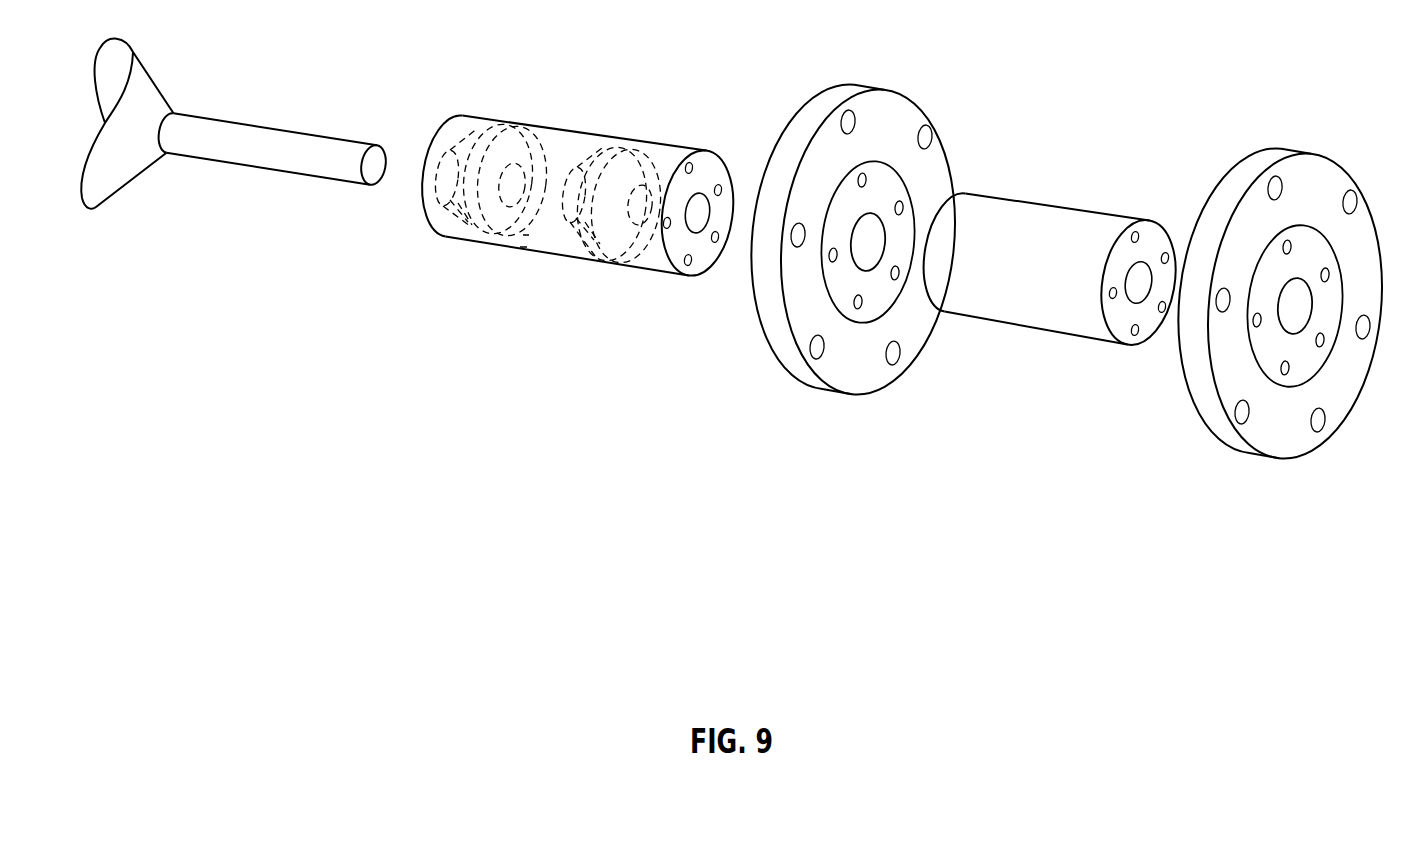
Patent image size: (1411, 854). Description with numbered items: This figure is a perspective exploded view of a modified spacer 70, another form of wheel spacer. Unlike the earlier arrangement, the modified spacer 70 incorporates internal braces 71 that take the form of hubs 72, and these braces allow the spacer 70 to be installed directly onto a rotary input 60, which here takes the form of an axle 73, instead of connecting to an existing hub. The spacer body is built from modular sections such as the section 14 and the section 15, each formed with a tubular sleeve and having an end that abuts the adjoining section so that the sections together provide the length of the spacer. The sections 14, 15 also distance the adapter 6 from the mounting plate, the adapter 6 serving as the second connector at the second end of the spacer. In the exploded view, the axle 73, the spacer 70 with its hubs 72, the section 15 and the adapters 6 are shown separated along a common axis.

The rotary input 60 is at (235, 140).
The axle 73 is at (278, 172).
The modified spacer 70 is at (578, 195).
The modular section 14 is at (673, 148).
The internal braces 71 is at (472, 242).
The hubs 72 is at (532, 247).
The adapter 6 is at (920, 102).
The modular section 15 is at (1063, 207).